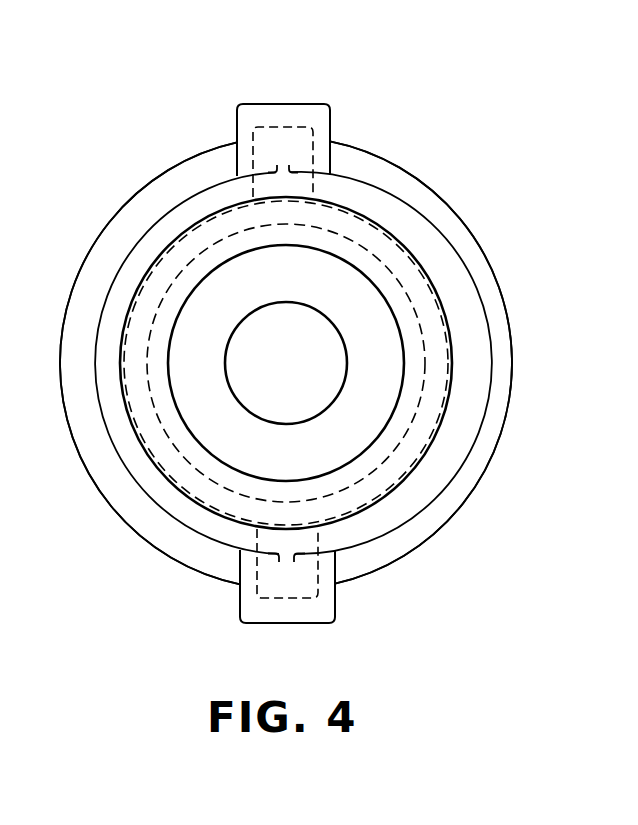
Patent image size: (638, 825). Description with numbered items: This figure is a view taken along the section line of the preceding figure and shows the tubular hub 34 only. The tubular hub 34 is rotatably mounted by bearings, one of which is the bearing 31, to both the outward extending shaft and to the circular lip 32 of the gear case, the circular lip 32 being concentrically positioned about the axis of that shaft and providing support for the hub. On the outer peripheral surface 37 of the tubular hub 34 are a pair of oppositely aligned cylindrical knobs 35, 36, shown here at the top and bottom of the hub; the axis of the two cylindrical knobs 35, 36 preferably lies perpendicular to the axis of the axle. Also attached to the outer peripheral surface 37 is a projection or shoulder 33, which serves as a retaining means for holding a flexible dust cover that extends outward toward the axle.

The bearing 31 is at (442, 307).
The circular lip 32 is at (422, 403).
The projection or shoulder 33 is at (405, 168).
The tubular hub 34 is at (106, 196).
The cylindrical knob 35 is at (267, 104).
The cylindrical knob 36 is at (263, 618).
The outer peripheral surface 37 is at (428, 236).